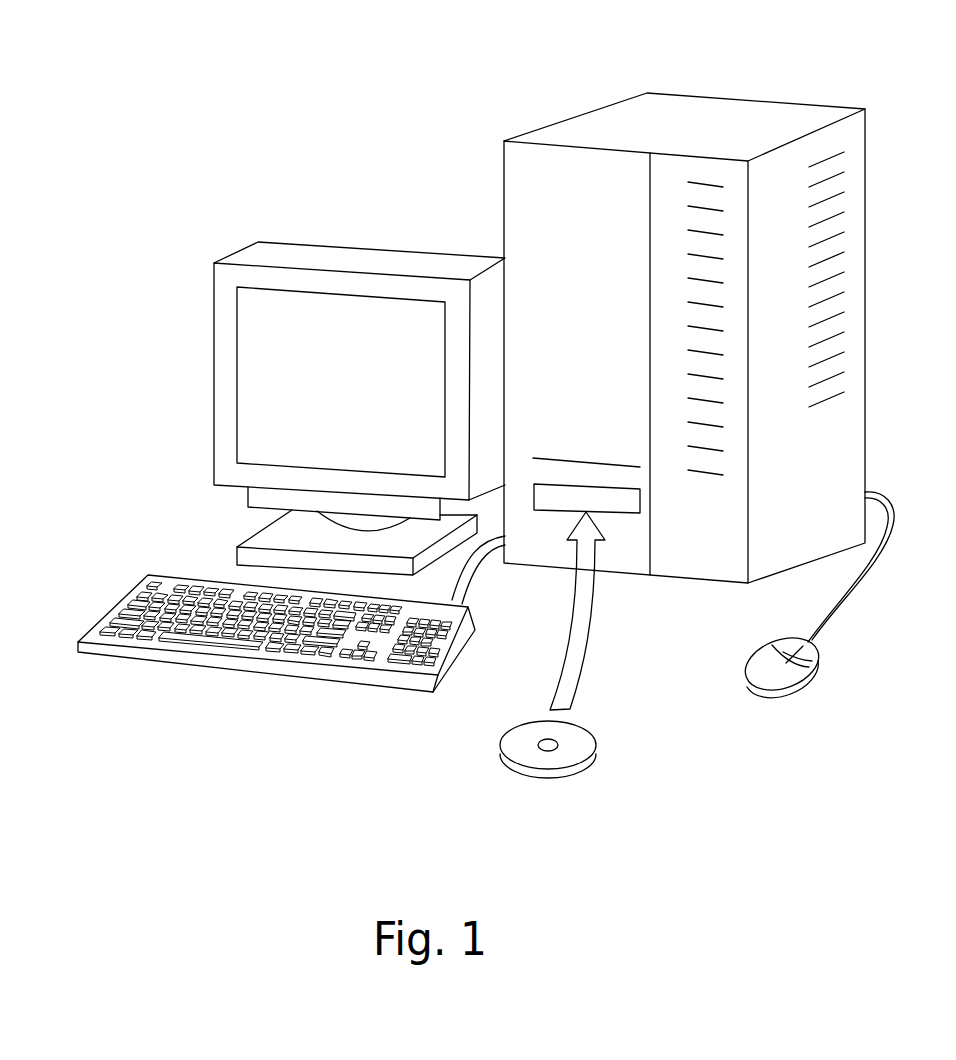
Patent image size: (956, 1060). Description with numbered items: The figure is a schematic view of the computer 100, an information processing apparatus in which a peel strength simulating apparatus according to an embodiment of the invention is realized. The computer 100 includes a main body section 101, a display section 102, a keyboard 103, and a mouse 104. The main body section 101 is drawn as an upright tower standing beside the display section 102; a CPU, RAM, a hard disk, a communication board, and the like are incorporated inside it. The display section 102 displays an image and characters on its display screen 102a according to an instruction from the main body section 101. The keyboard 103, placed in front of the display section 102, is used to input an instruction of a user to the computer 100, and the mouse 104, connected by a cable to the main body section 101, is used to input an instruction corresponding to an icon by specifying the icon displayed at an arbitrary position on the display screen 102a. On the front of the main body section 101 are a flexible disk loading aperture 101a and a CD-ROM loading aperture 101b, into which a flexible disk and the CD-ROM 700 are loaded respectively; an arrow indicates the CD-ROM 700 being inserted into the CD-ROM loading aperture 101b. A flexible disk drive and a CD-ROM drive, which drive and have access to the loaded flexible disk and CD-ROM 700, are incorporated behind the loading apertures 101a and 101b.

The computer 100 is at (328, 152).
The main body section 101 is at (790, 120).
The flexible disk loading aperture 101a is at (582, 460).
The CD-ROM loading aperture 101b is at (640, 503).
The display section 102 is at (213, 425).
The display screen 102a is at (253, 332).
The keyboard 103 is at (197, 643).
The mouse 104 is at (757, 700).
The CD-ROM 700 is at (513, 742).